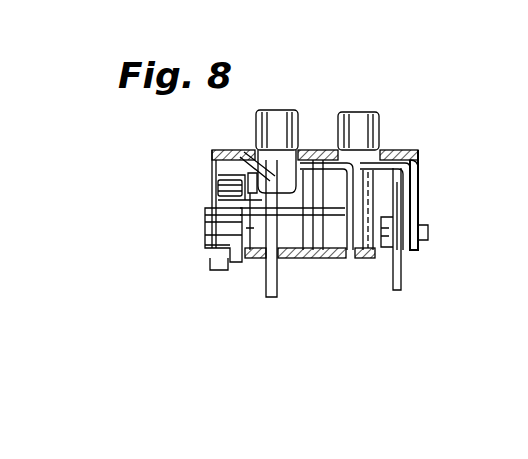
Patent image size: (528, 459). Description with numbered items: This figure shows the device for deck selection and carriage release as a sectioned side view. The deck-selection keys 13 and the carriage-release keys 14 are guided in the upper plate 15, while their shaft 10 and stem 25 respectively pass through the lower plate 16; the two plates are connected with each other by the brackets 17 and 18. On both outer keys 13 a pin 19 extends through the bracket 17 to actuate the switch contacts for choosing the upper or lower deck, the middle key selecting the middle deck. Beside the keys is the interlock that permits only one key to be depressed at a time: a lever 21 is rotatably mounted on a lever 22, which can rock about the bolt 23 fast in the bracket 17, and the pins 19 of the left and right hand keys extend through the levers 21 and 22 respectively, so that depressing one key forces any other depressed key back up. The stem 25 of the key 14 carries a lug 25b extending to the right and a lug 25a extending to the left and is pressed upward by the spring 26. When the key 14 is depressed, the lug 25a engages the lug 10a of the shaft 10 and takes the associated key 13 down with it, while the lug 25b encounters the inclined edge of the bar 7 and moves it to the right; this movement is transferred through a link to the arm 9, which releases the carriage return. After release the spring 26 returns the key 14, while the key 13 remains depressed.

The bar 7 is at (400, 268).
The arm 9 is at (243, 355).
The shaft 10 is at (328, 380).
The lug 10a is at (313, 262).
The key 13 is at (281, 125).
The key 14 is at (357, 125).
The plate 15 is at (420, 152).
The plate 16 is at (333, 240).
The bracket 17 is at (245, 175).
The bracket 18 is at (420, 190).
The pin 19 is at (240, 188).
The lever 21 is at (240, 151).
The lever 22 is at (244, 262).
The bolt 23 is at (235, 205).
The stem 25 is at (357, 262).
The lug 25a is at (312, 148).
The lug 25b is at (394, 153).
The spring 26 is at (412, 215).